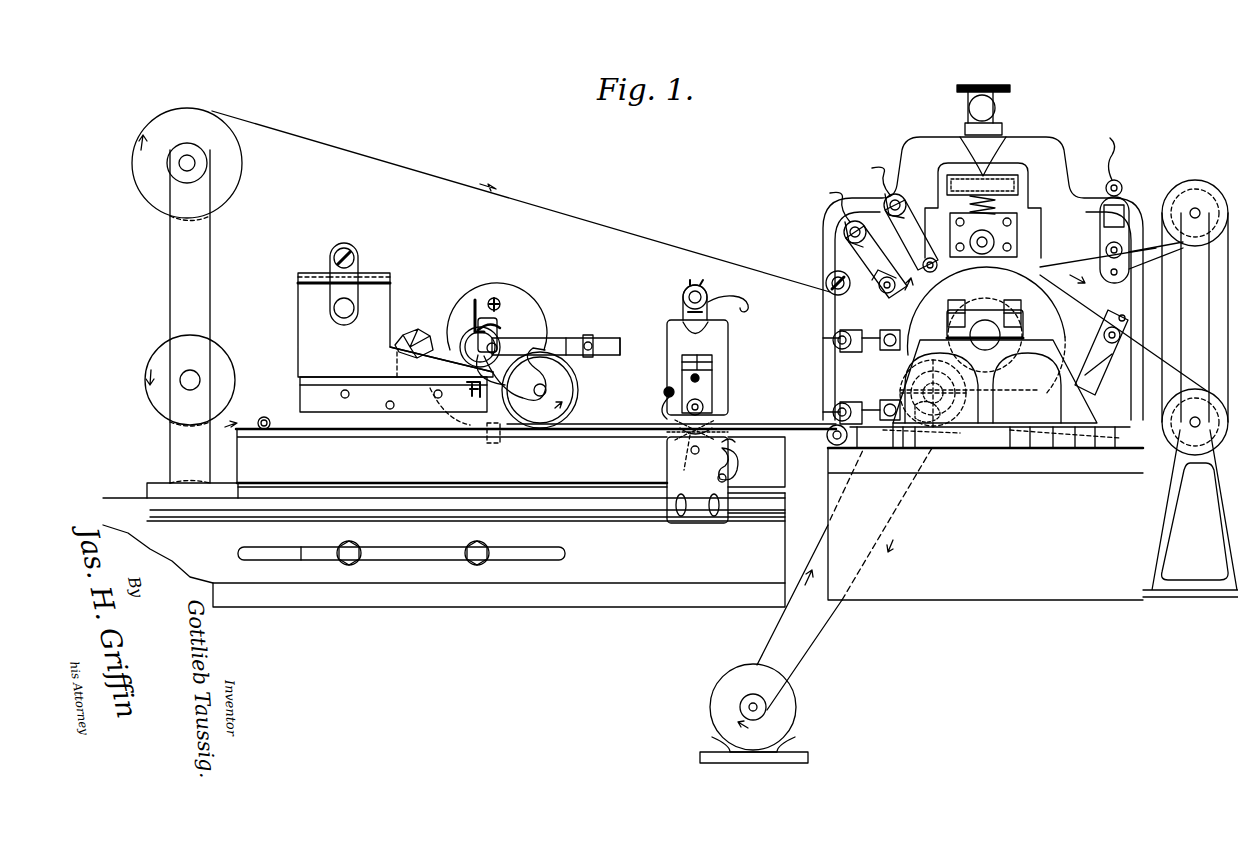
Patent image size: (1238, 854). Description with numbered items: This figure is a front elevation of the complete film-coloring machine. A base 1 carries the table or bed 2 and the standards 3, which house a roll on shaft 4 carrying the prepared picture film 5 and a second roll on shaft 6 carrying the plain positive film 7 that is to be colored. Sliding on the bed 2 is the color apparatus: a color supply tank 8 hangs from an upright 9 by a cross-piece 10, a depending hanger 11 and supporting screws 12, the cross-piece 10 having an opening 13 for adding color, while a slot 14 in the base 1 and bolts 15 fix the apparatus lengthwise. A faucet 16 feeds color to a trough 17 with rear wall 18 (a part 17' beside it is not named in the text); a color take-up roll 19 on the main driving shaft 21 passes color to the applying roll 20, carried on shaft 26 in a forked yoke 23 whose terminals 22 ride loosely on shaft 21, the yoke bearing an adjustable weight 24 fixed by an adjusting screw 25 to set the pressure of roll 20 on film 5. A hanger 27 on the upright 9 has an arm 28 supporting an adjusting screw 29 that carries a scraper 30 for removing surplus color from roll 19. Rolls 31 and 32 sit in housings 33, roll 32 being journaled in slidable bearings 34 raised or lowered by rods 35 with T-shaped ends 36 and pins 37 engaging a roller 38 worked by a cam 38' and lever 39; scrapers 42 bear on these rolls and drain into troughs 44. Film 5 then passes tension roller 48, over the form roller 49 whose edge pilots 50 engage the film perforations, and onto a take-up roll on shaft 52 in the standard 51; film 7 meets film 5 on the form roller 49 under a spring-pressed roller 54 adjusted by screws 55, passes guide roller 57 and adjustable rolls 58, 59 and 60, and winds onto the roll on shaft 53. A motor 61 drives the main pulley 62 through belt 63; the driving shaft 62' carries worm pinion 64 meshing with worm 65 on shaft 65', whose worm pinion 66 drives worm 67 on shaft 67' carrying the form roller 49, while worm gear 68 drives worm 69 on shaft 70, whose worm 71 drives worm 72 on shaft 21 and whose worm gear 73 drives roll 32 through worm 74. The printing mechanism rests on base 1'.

The base 1 is at (444, 553).
The base 1' is at (985, 526).
The table 2 is at (511, 465).
The standards 3 is at (180, 287).
The shaft 4 is at (186, 381).
The prepared picture film 5 is at (230, 425).
The shaft 6 is at (183, 165).
The film 7 is at (330, 144).
The color supply tank 8 is at (318, 340).
The upright 9 is at (345, 414).
The cross-piece 10 is at (373, 276).
The depending hanger 11 is at (338, 289).
The supporting screws 12 is at (354, 311).
The opening 13 is at (312, 270).
The slot 14 is at (256, 551).
The bolts 15 is at (466, 549).
The faucet 16 is at (398, 335).
The trough 17 is at (441, 334).
The arm stop 17' is at (454, 427).
The rear wall 18 is at (397, 361).
The color take-up roll 19 is at (500, 338).
The color applying roll 20 is at (576, 392).
The main driving shaft 21 is at (531, 346).
The terminals 22 is at (511, 372).
The forked yoke 23 is at (611, 356).
The adjustable weight 24 is at (589, 334).
The adjusting screw 25 is at (596, 345).
The shaft 26 is at (542, 398).
The hanger 27 is at (486, 316).
The arm 28 is at (506, 328).
The adjusting screw 29 is at (487, 313).
The scraper 30 is at (491, 297).
The roll 31 is at (681, 440).
The roll 32 is at (724, 428).
The housings 33 is at (668, 354).
The slidable bearings 34 is at (712, 386).
The rods 35 is at (705, 365).
The T-shaped ends 36 is at (702, 380).
The pins 37 is at (688, 306).
The roller 38 is at (719, 260).
The cam 38' is at (703, 257).
The lever 39 is at (740, 302).
The scrapers 42 is at (665, 414).
The trough 44 is at (723, 442).
The tension roll 48 is at (916, 412).
The form roller 49 is at (989, 258).
The pilots 50 is at (975, 258).
The standard 51 is at (1222, 512).
The shaft 52 is at (1190, 430).
The shaft 53 is at (1195, 200).
The spring pressed roller 54 is at (993, 252).
The screws 55 is at (968, 107).
The guide roller 57 is at (826, 278).
The guiding and tension rolls 58 is at (847, 236).
The rolls 59 is at (870, 280).
The rolls 60 is at (1126, 340).
The motor 61 is at (785, 712).
The main pulley 62 is at (985, 385).
The driving shaft 62' is at (933, 369).
The belt 63 is at (832, 626).
The worm pinion 64 is at (908, 453).
The worm 65 is at (995, 381).
The shaft 65' is at (1006, 343).
The worm pinion 66 is at (1030, 402).
The worm 67 is at (1001, 330).
The shaft 67' is at (1001, 310).
The worm gear 68 is at (899, 346).
The worm 69 is at (936, 448).
The driving shaft 70 is at (623, 430).
The worm 71 is at (488, 437).
The worm 72 is at (467, 302).
The worm gear 73 is at (686, 453).
The worm 74 is at (714, 405).